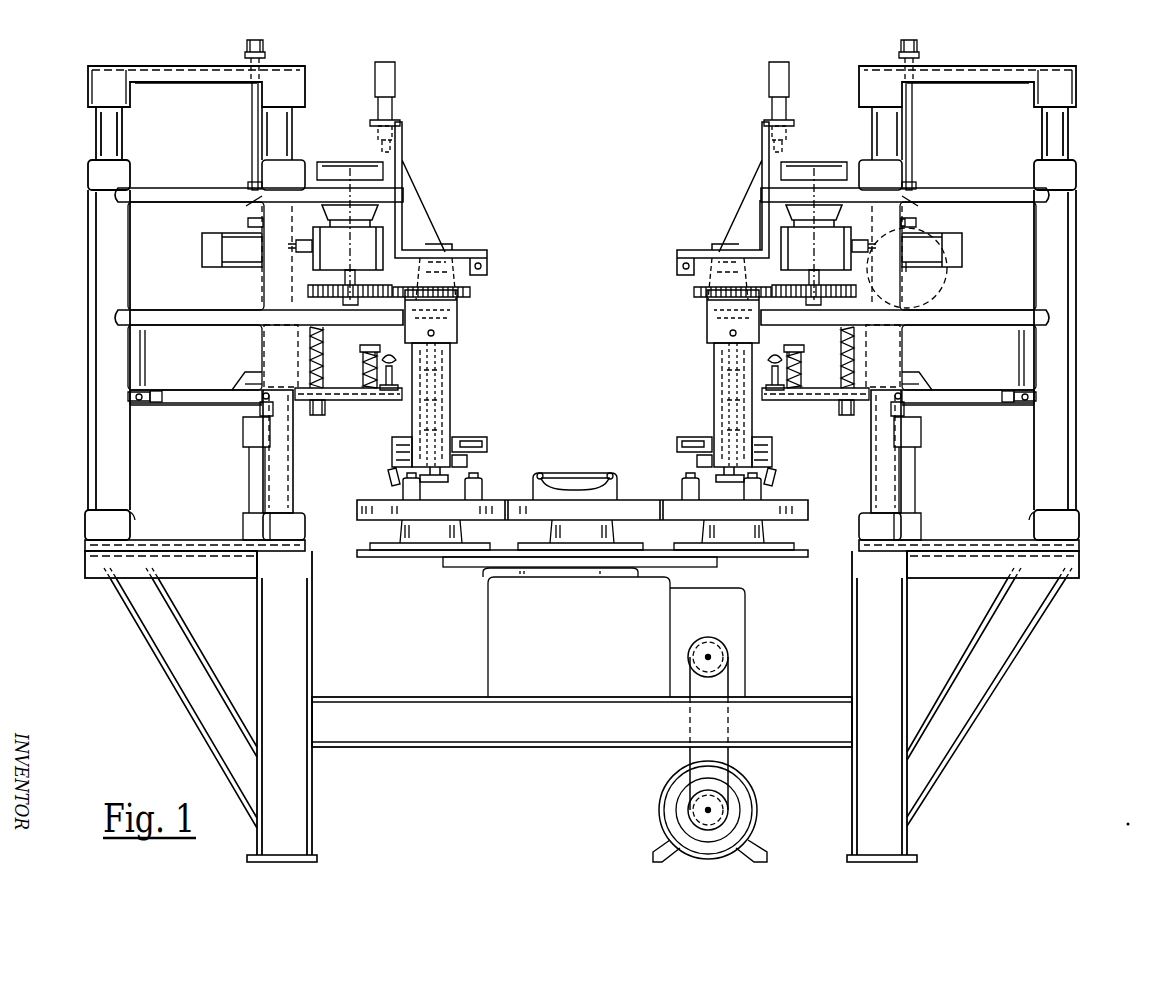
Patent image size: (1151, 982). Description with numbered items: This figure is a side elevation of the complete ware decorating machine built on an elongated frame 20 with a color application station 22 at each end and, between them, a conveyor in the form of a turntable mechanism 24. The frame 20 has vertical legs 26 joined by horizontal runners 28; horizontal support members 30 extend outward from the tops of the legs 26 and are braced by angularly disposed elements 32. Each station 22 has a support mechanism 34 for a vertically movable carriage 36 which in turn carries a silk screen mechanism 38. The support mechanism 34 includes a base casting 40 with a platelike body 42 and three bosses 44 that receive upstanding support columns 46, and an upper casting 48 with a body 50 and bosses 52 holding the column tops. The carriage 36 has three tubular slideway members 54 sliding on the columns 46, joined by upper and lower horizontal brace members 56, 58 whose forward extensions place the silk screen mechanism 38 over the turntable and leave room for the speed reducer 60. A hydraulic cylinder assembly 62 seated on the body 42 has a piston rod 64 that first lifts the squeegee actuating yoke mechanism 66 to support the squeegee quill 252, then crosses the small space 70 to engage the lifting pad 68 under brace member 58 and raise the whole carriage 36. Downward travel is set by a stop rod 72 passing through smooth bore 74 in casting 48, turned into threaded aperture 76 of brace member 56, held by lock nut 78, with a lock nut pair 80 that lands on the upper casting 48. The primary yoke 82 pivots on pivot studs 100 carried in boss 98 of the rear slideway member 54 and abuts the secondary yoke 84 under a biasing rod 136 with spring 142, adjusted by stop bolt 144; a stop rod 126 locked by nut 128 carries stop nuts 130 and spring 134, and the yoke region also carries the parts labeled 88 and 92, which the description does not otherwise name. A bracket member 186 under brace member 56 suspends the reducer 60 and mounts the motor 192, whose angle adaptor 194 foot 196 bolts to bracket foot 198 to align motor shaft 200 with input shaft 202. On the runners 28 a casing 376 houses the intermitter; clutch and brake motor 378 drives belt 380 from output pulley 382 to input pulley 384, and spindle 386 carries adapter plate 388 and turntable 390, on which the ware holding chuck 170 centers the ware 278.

The frame 20 is at (205, 741).
The color application station 22 is at (452, 160).
The turntable mechanism 24 is at (466, 624).
The vertical legs 26 is at (300, 652).
The horizontal runners 28 is at (444, 700).
The horizontal support members 30 is at (200, 574).
The angularly disposed elements 32 is at (162, 652).
The support mechanism 34 is at (78, 86).
The vertically movable carriage 36 is at (78, 188).
The silk screen mechanism 38 is at (452, 232).
The base casting 40 is at (174, 532).
The platelike body 42 is at (214, 540).
The bosses 44 is at (136, 512).
The support columns 46 is at (90, 458).
The upper casting 48 is at (186, 56).
The body 50 is at (172, 78).
The bosses 52 is at (86, 100).
The tubular slideway members 54 is at (88, 342).
The upper horizontal brace member 56 is at (190, 190).
The lower horizontal brace member 58 is at (180, 312).
The gear or speed reducer mechanism 60 is at (358, 252).
The hydraulic cylinder assembly 62 is at (242, 450).
The piston rod 64 is at (258, 410).
The squeegee actuating yoke mechanism 66 is at (224, 388).
The lifting pad 68 is at (262, 338).
The small space 70 is at (248, 366).
The stop rod 72 is at (250, 106).
The smooth bore 74 is at (268, 78).
The threaded aperture 76 is at (248, 204).
The lock nut 78 is at (250, 186).
The lock nut pair 80 is at (242, 50).
The primary yoke 82 is at (188, 408).
The secondary yoke 84 is at (400, 402).
The pivot bolt 88 is at (178, 392).
The lug 92 is at (238, 376).
The boss 98 is at (148, 338).
The pivot studs 100 is at (136, 404).
The stop rod 126 is at (320, 410).
The nut 128 is at (326, 332).
The stop nuts 130 is at (330, 408).
The spring 134 is at (362, 356).
The biasing rod 136 is at (440, 344).
The spring 142 is at (420, 360).
The stop bolt 144 is at (398, 372).
The ware holding chuck 170 is at (386, 490).
The bracket member 186 is at (762, 212).
The motor 192 is at (966, 250).
The angle adaptor 194 is at (910, 296).
The foot 196 is at (916, 224).
The foot 198 is at (908, 218).
The shaft 200 is at (910, 262).
The input shaft 202 is at (300, 250).
The tubular quill 252 is at (446, 414).
The ware 278 is at (562, 472).
The casing 376 is at (488, 648).
The clutch and brake motor 378 is at (668, 782).
The drive belt 380 is at (686, 752).
The output shaft pulley 382 is at (700, 806).
The input shaft pulley 384 is at (720, 646).
The spindle 386 is at (490, 578).
The adapter plate 388 is at (446, 567).
The turntable 390 is at (392, 557).